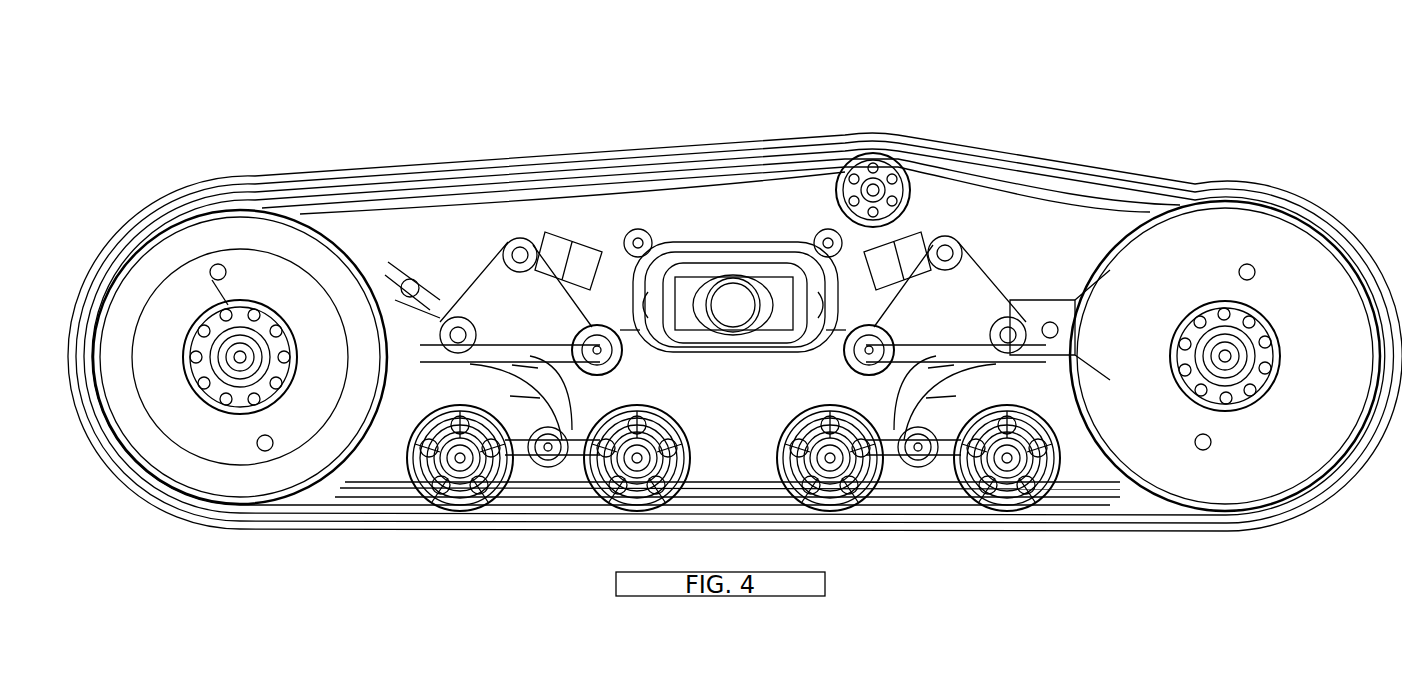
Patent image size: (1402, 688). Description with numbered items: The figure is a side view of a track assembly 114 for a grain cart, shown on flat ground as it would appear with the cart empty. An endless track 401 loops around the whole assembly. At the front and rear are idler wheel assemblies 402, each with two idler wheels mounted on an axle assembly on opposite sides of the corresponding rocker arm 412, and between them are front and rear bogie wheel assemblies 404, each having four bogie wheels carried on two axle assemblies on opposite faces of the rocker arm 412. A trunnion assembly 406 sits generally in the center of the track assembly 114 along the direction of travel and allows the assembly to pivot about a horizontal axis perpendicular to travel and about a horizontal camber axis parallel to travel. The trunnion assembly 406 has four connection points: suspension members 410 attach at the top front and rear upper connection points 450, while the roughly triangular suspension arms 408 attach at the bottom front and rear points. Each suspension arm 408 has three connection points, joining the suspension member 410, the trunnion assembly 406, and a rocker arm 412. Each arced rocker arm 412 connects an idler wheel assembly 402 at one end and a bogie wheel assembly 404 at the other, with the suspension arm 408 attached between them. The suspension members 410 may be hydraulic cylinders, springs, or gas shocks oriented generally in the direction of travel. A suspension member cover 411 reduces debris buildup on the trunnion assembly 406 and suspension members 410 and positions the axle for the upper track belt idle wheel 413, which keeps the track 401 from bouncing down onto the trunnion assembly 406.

The track assembly 114 is at (495, 157).
The track 401 is at (1050, 157).
The idler wheel assembly 402 is at (246, 512).
The bogie wheel assembly 404 is at (462, 510).
The trunnion assembly 406 is at (775, 350).
The suspension arm 408 is at (733, 303).
The suspension member 410 is at (568, 258).
The suspension member cover 411 is at (698, 220).
The rocker arm 412 is at (522, 380).
The upper track belt idle wheel 413 is at (896, 168).
The upper connection point 450 is at (640, 236).